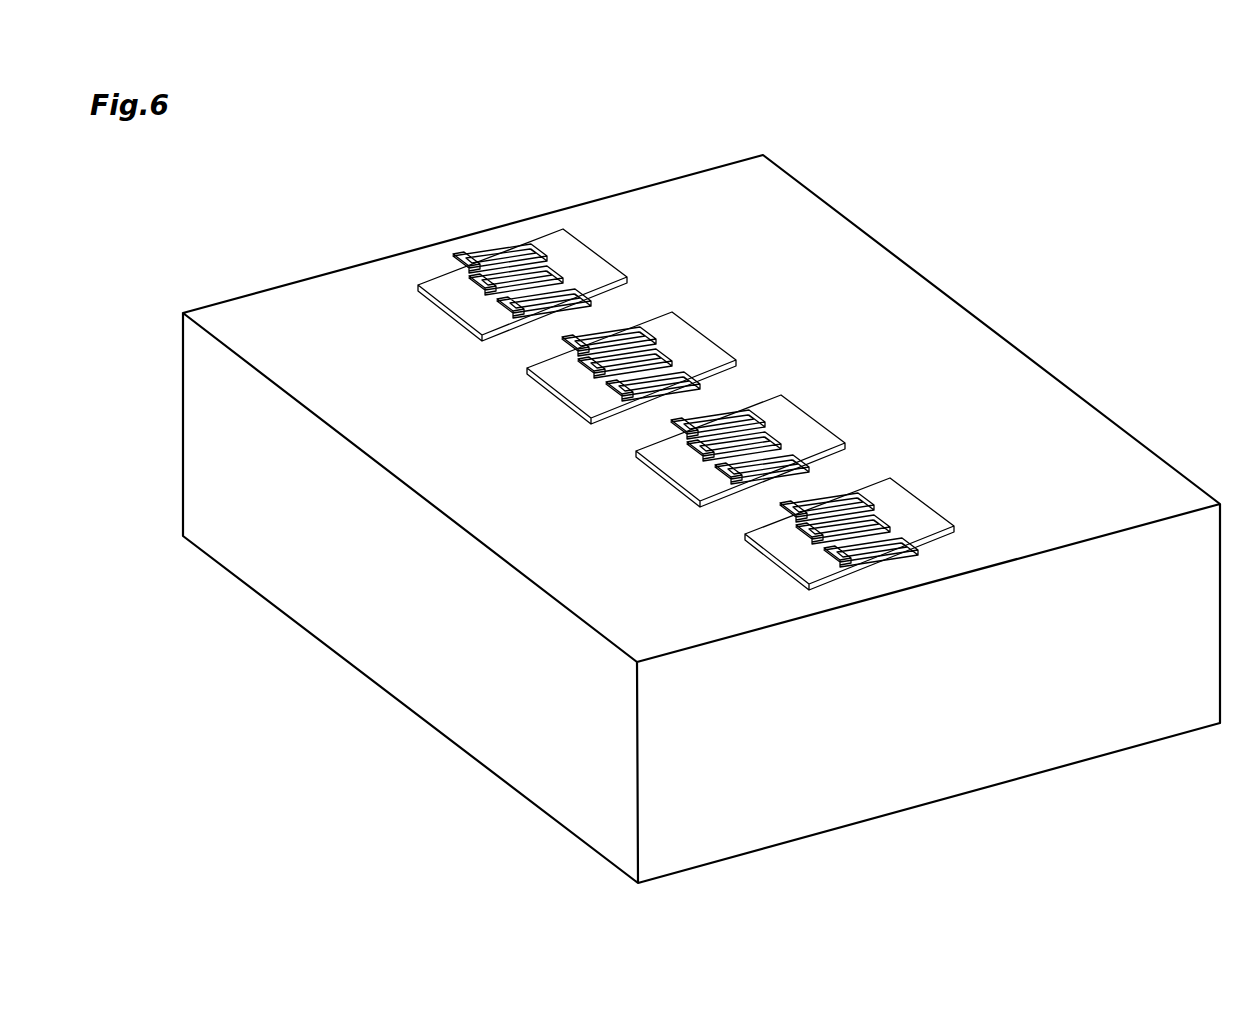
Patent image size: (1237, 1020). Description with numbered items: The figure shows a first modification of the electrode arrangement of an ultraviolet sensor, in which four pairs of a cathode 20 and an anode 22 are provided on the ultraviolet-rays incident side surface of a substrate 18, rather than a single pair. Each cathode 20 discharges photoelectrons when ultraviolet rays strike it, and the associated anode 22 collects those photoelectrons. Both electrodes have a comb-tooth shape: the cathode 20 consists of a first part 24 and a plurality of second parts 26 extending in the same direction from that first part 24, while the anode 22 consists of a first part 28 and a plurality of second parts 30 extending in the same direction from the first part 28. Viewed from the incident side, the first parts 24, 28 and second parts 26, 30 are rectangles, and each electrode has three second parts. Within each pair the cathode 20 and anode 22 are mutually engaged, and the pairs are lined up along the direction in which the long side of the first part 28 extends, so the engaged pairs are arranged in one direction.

The substrate 18 is at (922, 752).
The cathode 20 is at (678, 341).
The anode 22 is at (318, 303).
The first part 24 is at (600, 263).
The second parts 26 is at (568, 290).
The first part 28 is at (433, 287).
The second parts 30 is at (501, 311).